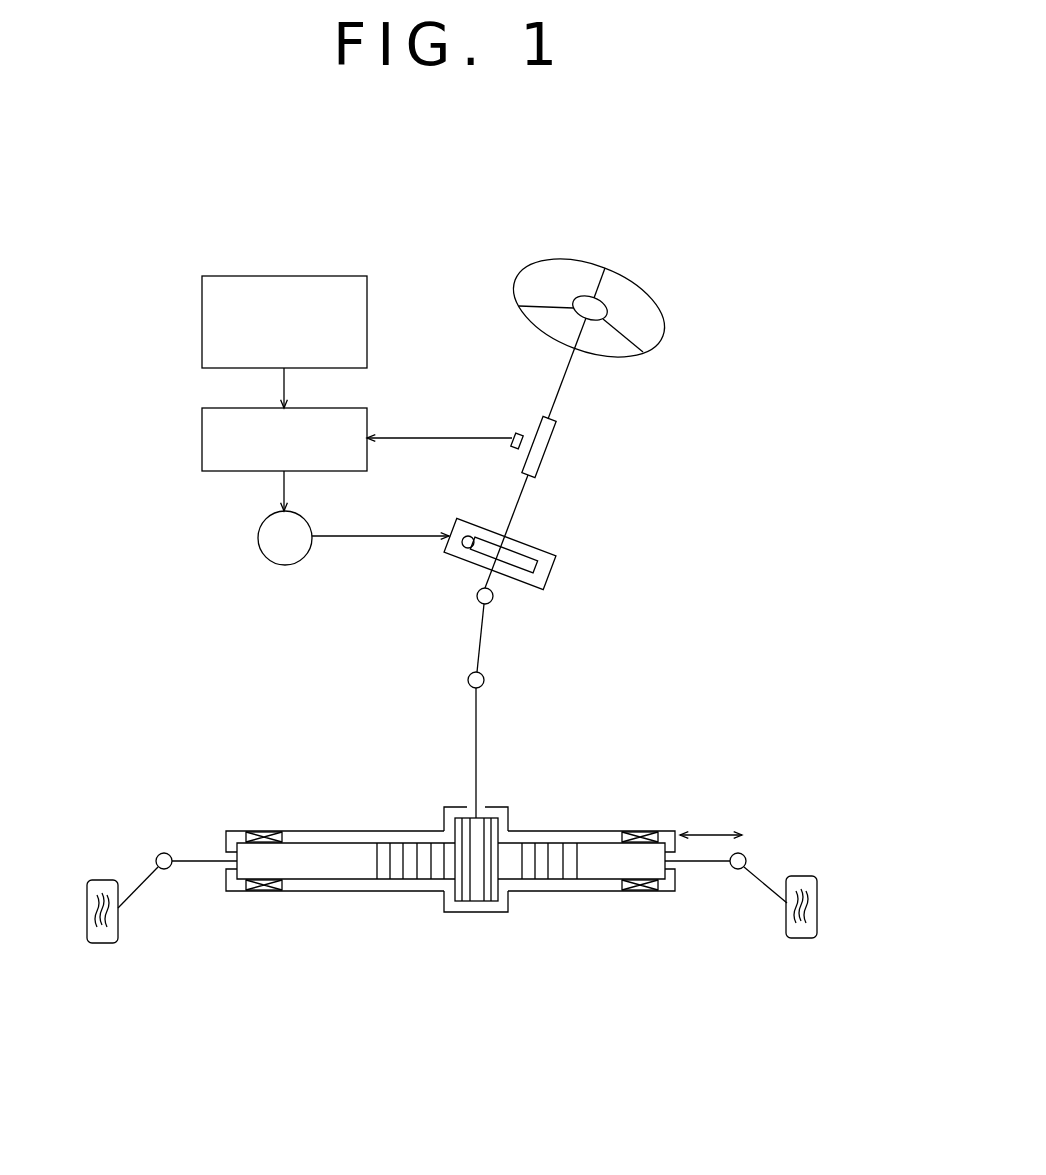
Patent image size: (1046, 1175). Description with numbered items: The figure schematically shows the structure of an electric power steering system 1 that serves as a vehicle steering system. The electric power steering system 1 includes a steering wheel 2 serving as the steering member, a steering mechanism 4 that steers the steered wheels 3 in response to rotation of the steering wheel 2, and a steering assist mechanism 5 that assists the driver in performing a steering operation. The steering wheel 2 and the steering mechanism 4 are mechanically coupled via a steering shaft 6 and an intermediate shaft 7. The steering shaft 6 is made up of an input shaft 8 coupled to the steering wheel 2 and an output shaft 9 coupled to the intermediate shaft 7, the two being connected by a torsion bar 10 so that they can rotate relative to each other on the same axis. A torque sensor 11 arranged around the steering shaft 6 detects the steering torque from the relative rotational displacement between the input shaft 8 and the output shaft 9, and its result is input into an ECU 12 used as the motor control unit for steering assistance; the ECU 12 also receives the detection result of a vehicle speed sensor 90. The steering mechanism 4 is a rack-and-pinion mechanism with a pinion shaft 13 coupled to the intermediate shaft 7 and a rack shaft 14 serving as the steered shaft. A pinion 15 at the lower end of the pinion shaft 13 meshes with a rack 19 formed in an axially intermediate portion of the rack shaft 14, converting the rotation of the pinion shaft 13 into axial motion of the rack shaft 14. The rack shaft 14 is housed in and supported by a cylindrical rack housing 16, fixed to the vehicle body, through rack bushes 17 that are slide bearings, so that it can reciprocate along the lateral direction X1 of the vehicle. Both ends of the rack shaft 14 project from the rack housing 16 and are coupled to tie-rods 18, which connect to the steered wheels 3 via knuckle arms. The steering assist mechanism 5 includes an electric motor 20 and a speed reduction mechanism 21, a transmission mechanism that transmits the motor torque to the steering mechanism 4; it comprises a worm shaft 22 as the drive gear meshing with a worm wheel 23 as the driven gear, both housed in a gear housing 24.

The electric power steering system 1 is at (452, 282).
The steering wheel 2 is at (585, 262).
The steered wheels 3 is at (103, 880).
The steering mechanism 4 is at (596, 787).
The steering assist mechanism 5 is at (367, 628).
The steering shaft 6 is at (572, 370).
The intermediate shaft 7 is at (478, 653).
The input shaft 8 is at (557, 400).
The output shaft 9 is at (523, 498).
The torsion bar 10 is at (542, 450).
The torque sensor 11 is at (515, 432).
The ECU 12 is at (202, 438).
The pinion shaft 13 is at (478, 740).
The rack shaft 14 is at (595, 883).
The pinion 15 is at (478, 901).
The rack housing 16 is at (327, 893).
The rack bushes 17 is at (262, 830).
The tie-rods 18 is at (138, 893).
The rack 19 is at (400, 873).
The electric motor 20 is at (258, 538).
The speed reduction mechanism 21 is at (581, 546).
The worm shaft 22 is at (461, 556).
The worm wheel 23 is at (545, 567).
The gear housing 24 is at (515, 582).
The vehicle speed sensor 90 is at (202, 322).
The lateral direction X1 is at (712, 832).